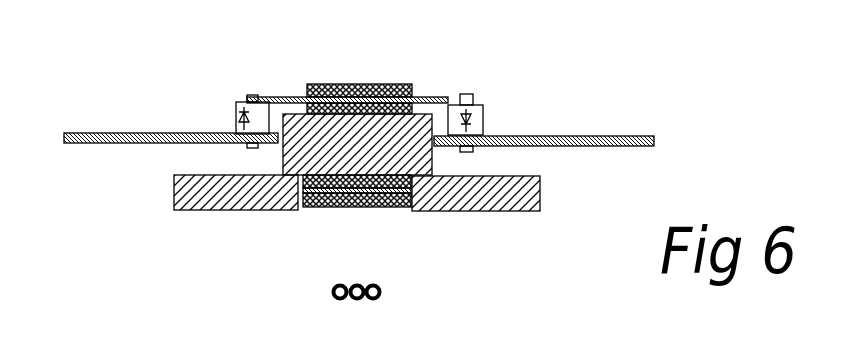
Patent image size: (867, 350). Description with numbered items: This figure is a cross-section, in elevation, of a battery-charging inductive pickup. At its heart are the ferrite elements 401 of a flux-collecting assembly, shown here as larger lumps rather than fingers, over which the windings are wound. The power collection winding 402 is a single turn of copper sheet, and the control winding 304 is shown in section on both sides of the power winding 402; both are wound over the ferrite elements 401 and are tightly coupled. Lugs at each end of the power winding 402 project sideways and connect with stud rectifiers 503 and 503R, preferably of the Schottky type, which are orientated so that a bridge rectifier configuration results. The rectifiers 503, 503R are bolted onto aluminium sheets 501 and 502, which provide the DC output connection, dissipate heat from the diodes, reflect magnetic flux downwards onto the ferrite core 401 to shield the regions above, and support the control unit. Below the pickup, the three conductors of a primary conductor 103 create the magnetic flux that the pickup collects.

The primary conductor 103 is at (346, 283).
The control winding 304 is at (365, 83).
The ferrite core 401 is at (283, 158).
The power collection winding 402 is at (302, 96).
The aluminium sheet 501 is at (162, 133).
The aluminium sheet 502 is at (602, 137).
The stud rectifier 503 is at (235, 118).
The stud rectifier 503R is at (487, 118).